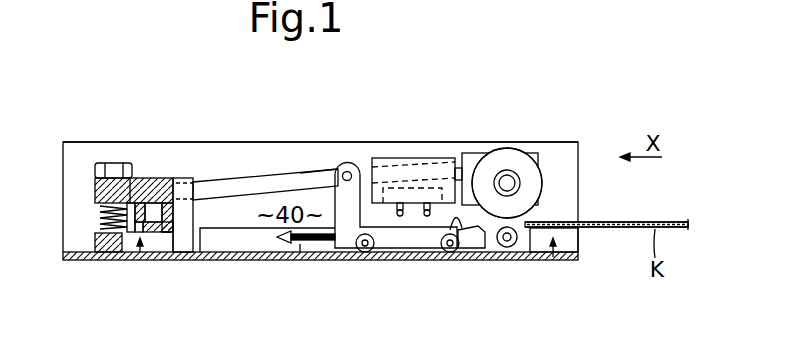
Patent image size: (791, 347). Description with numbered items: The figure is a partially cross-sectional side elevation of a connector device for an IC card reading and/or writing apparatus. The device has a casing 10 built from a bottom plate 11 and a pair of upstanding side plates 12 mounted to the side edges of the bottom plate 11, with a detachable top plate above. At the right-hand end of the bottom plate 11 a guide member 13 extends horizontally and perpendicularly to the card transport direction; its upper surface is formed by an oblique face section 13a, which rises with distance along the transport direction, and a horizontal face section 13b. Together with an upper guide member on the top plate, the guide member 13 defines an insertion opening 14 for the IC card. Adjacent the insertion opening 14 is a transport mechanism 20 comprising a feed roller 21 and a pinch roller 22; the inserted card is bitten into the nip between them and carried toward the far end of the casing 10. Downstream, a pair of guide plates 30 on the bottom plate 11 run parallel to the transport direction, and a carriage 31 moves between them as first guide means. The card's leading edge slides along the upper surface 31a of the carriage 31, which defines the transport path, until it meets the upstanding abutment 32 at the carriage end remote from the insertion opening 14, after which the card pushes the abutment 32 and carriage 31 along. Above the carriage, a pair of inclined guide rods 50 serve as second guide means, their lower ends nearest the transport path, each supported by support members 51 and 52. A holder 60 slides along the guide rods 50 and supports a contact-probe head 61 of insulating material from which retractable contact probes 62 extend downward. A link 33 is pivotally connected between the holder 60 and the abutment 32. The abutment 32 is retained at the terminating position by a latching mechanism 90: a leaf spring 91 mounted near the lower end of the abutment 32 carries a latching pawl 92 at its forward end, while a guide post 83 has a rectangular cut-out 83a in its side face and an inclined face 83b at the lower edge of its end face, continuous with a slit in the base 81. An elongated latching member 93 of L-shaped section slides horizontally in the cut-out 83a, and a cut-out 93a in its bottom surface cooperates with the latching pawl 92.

The casing 10 is at (556, 135).
The bottom plate 11 is at (335, 260).
The side plate 12 is at (440, 141).
The guide member 13 is at (556, 262).
The oblique face section 13a is at (567, 228).
The horizontal face section 13b is at (543, 221).
The insertion opening 14 is at (622, 222).
The transport mechanism 20 is at (524, 141).
The feed roller 21 is at (500, 157).
The pinch roller 22 is at (509, 248).
The guide plate 30 is at (235, 243).
The carriage 31 is at (421, 250).
The upper surface 31a is at (460, 248).
The abutment 32 is at (317, 168).
The link 33 is at (361, 171).
The guide rod 50 is at (267, 180).
The support member 51 is at (473, 157).
The support member 52 is at (92, 163).
The holder 60 is at (398, 158).
The contact-probe head 61 is at (442, 203).
The contact probe 62 is at (400, 217).
The base 81 is at (97, 253).
The guide post 83 is at (131, 178).
The rectangular cut-out 83a is at (183, 178).
The inclined face 83b is at (178, 240).
The latching mechanism 90 is at (142, 260).
The leaf spring 91 is at (301, 253).
The latching pawl 92 is at (286, 252).
The latching member 93 is at (152, 178).
The cut-out 93a is at (122, 252).